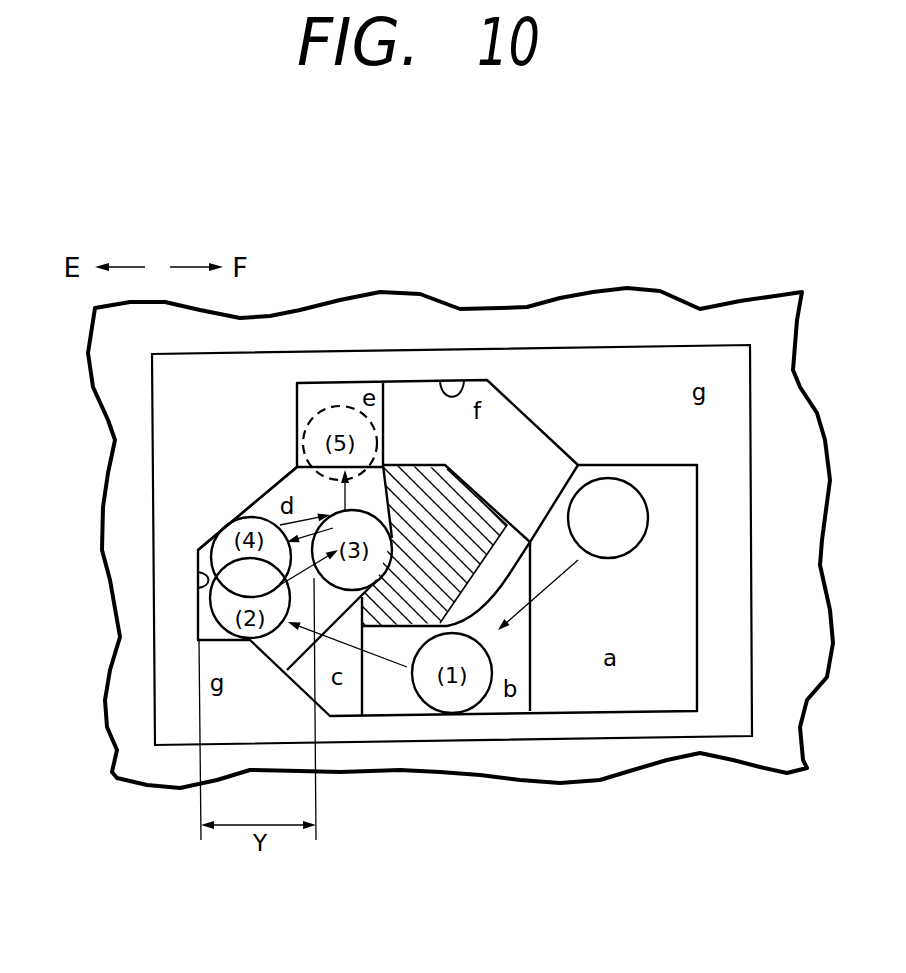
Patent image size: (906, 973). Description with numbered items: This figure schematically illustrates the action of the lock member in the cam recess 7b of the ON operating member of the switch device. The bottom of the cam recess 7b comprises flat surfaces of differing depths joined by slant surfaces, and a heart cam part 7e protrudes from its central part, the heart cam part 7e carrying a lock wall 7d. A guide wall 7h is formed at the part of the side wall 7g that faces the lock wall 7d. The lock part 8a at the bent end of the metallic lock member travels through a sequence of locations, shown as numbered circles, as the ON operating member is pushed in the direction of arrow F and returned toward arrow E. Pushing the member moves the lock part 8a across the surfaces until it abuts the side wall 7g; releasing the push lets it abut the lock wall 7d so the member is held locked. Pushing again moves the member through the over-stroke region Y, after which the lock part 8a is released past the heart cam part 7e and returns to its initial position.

The cam recess 7b is at (465, 380).
The lock wall 7d is at (383, 500).
The heart cam part 7e is at (411, 465).
The side wall 7g is at (198, 587).
The guide wall 7h is at (255, 507).
The lock part 8a is at (613, 492).